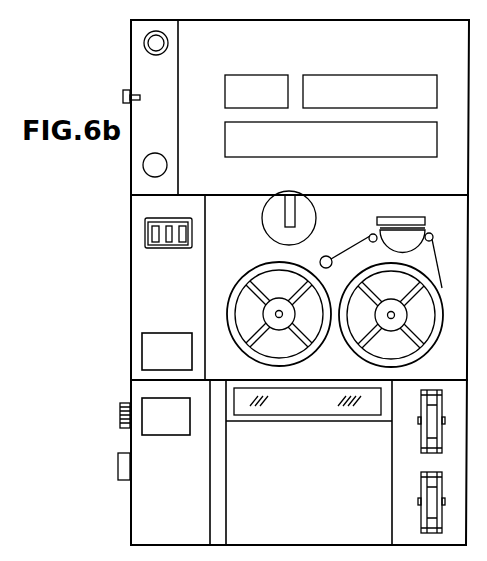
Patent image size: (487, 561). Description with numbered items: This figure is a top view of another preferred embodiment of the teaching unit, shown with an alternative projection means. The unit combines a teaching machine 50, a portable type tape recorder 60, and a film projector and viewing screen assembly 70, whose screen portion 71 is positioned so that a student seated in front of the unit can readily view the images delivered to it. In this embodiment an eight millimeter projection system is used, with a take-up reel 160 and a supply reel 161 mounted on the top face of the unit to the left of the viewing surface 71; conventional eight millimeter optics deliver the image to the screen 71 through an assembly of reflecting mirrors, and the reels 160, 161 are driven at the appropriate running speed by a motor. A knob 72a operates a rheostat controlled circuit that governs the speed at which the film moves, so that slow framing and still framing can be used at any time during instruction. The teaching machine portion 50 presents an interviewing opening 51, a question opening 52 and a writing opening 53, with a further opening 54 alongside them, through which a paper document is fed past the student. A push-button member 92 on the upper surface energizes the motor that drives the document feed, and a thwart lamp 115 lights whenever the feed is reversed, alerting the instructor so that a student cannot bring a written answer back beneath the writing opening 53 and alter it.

The teaching machine 50 is at (140, 273).
The interviewing opening 51 is at (380, 82).
The question opening 52 is at (395, 145).
The writing opening 53 is at (258, 80).
The display window 54 is at (287, 147).
The portable type tape recorder 60 is at (140, 513).
The film projector and viewing screen assembly 70 is at (328, 488).
The screen portion 71 is at (310, 403).
The knob 72a is at (118, 467).
The push-button member 92 is at (147, 50).
The thwart lamp 115 is at (143, 165).
The take-up reel 160 is at (422, 438).
The supply reel 161 is at (420, 510).